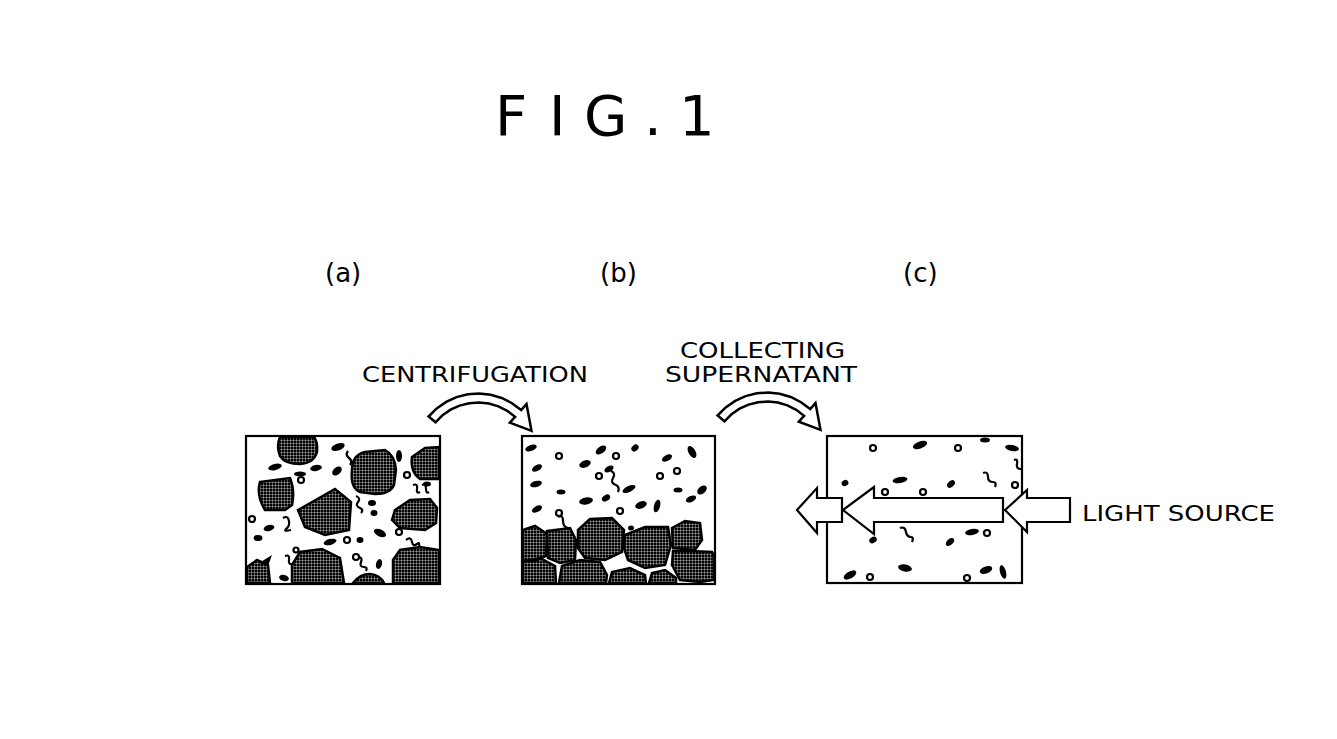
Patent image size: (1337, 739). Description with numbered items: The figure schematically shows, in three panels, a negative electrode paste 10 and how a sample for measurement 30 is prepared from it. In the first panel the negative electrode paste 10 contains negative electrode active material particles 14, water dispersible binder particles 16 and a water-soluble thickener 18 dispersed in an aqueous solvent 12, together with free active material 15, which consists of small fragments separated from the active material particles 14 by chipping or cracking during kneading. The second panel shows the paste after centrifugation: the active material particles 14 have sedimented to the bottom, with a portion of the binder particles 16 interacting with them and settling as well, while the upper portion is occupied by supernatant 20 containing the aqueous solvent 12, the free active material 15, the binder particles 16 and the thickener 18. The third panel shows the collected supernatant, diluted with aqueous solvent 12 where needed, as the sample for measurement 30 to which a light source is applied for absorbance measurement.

The negative electrode paste 10 is at (306, 492).
The aqueous solvent 12 is at (262, 458).
The negative electrode active material particles 14 is at (418, 582).
The free active material 15 is at (319, 465).
The water dispersible binder particles 16 is at (344, 545).
The water-soluble thickener 18 is at (283, 527).
The supernatant 20 is at (722, 437).
The sample for measurement 30 is at (933, 456).